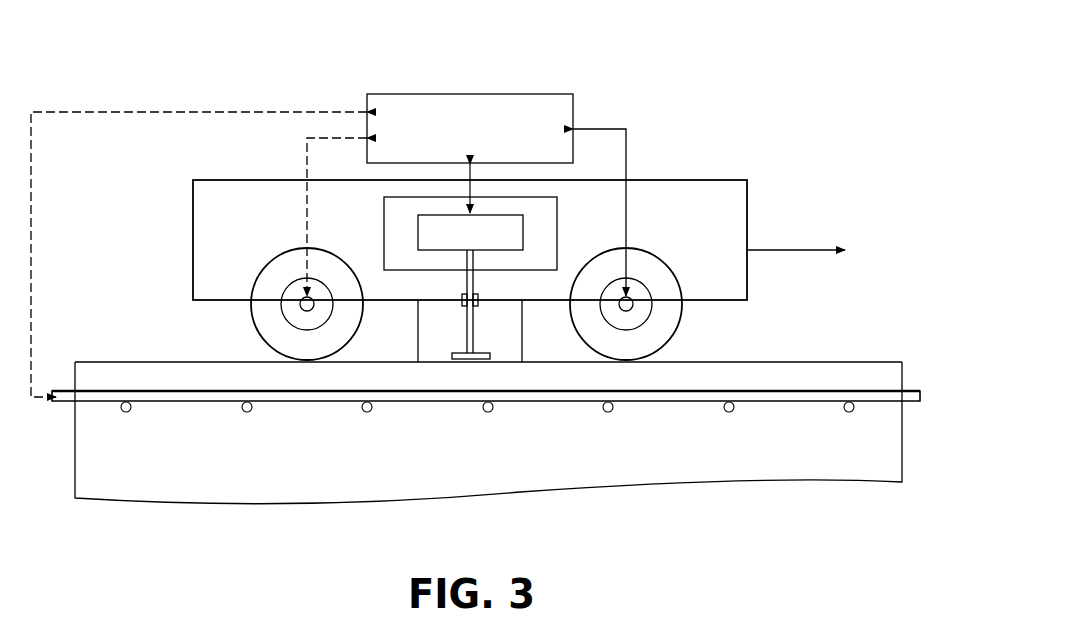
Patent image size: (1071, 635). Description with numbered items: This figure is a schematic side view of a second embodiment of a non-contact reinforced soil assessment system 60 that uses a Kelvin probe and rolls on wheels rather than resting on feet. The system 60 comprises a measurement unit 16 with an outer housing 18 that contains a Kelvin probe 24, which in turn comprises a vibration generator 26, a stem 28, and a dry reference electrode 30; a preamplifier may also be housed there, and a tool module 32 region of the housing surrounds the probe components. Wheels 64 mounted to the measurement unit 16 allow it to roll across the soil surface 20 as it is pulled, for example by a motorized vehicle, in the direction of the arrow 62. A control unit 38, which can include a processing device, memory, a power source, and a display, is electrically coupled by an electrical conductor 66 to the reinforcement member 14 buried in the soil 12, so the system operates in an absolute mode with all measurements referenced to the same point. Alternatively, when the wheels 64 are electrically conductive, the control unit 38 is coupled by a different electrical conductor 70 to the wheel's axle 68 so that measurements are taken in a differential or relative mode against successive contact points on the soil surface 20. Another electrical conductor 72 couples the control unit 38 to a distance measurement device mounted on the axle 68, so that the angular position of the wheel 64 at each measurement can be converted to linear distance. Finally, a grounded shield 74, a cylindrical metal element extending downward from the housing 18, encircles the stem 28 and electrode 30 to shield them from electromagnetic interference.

The soil 12 is at (131, 493).
The reinforcement member 14 is at (655, 399).
The measurement unit 16 is at (782, 199).
The outer housing 18 is at (193, 215).
The soil surface 20 is at (823, 362).
The Kelvin probe 24 is at (355, 240).
The vibration generator 26 is at (470, 232).
The stem 28 is at (465, 292).
The dry reference electrode 30 is at (453, 352).
The tool module 32 is at (558, 242).
The control unit 38 is at (470, 153).
The non-contact reinforced soil assessment system 60 is at (832, 60).
The arrow 62 is at (788, 256).
The wheels 64 is at (247, 270).
The electrical conductor 66 is at (164, 112).
The axle 68 is at (306, 311).
The electrical conductor 70 is at (307, 156).
The electrical conductor 72 is at (626, 146).
The grounded shield 74 is at (524, 353).